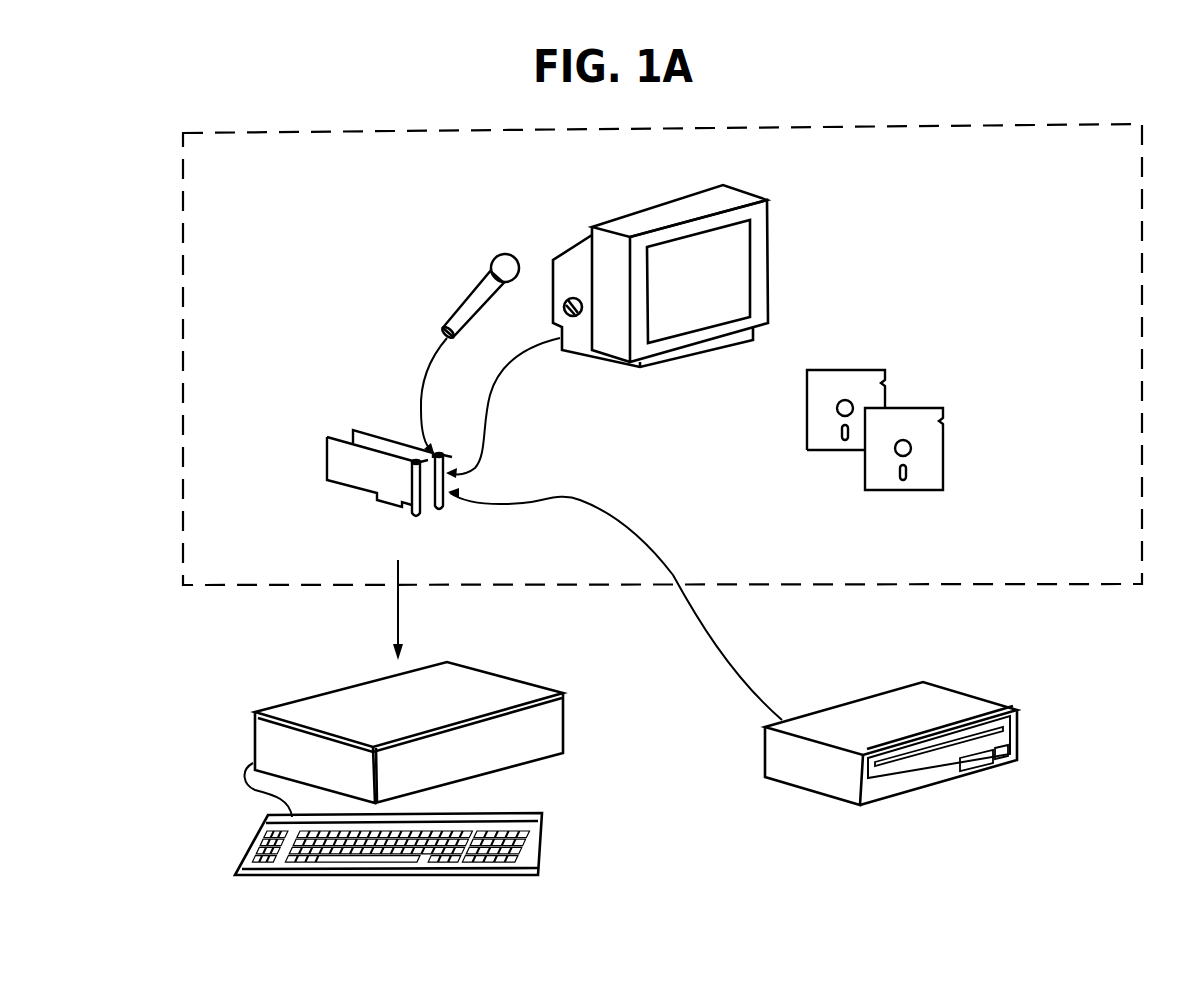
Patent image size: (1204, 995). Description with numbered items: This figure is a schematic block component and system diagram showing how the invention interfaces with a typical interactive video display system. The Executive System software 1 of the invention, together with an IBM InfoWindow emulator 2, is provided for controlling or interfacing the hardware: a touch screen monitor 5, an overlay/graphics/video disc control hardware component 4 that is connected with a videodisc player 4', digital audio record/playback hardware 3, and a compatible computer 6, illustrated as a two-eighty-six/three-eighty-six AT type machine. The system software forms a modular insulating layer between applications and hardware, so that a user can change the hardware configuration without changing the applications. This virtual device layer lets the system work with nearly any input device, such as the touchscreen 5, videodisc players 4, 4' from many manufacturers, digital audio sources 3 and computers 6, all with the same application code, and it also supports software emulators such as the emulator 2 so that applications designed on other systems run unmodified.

The Executive System software 1 is at (857, 368).
The IBM InfoWindow emulator 2 is at (927, 420).
The digital audio record/playback hardware 3 is at (338, 468).
The overlay/graphics/video disc control hardware component 4 is at (572, 458).
The videodisc player 4' is at (981, 718).
The touch screen monitor 5 is at (733, 200).
The compatible computer 6 is at (545, 779).